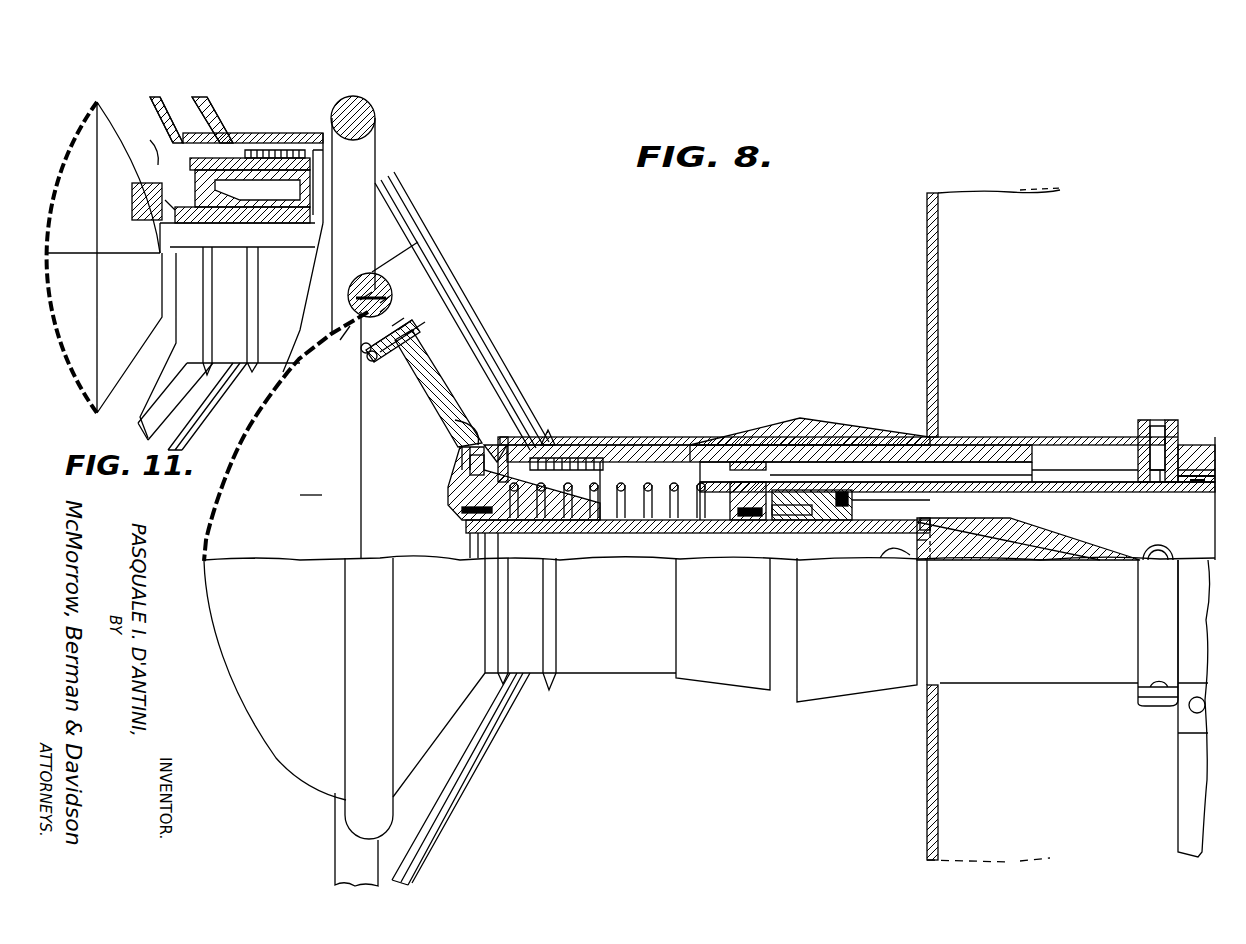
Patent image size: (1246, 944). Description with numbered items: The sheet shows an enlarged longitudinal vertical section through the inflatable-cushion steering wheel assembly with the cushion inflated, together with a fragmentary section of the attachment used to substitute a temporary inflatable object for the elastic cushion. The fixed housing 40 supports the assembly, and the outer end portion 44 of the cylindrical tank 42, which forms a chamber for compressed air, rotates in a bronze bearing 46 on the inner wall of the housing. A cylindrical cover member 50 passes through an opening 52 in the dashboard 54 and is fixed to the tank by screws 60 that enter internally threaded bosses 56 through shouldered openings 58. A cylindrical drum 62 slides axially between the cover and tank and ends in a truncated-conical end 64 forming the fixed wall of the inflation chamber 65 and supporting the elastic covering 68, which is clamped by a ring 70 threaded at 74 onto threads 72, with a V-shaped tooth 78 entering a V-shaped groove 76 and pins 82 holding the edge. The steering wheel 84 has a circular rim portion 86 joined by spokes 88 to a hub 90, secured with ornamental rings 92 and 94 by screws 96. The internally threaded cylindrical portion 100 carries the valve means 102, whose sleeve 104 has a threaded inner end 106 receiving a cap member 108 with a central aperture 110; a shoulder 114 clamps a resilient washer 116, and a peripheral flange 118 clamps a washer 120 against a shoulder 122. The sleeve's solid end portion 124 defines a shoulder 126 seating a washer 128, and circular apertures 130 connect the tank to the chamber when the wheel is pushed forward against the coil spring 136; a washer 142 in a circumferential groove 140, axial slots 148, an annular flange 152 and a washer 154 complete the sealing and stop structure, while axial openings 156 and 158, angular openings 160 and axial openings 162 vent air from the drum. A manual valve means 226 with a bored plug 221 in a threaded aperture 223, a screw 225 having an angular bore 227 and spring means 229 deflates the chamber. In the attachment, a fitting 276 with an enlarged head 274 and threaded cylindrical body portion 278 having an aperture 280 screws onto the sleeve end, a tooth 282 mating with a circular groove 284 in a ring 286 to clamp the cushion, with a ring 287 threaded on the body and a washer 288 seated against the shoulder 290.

In FIG. 8, the fixed housing 40 is at (1182, 452).
In FIG. 8, the cylindrical tank 42 is at (1085, 495).
In FIG. 8, the outer end portion 44 is at (1205, 500).
In FIG. 8, the bronze bearing 46 is at (1195, 482).
In FIG. 8, the cylindrical cover member 50 is at (800, 430).
In FIG. 8, the opening 52 is at (936, 440).
In FIG. 8, the dashboard 54 is at (940, 370).
In FIG. 8, the internally threaded bosses 56 is at (1170, 478).
In FIG. 8, the shouldered openings 58 is at (1180, 437).
In FIG. 8, the screws 60 is at (1138, 422).
In FIG. 8, the cylindrical drum 62 is at (695, 442).
In FIG. 8, the truncated-conical end 64 is at (445, 392).
In FIG. 8, the inflation chamber 65 is at (318, 498).
In FIG. 8, the elastic covering 68 is at (206, 518).
In FIG. 8, the ring 70 is at (404, 247).
In FIG. 8, the threads 72 is at (392, 296).
In FIG. 8, the threads 74 is at (353, 284).
In FIG. 8, the V-shaped groove 76 is at (387, 308).
In FIG. 8, the V-shaped tooth 78 is at (352, 324).
In FIG. 8, the pins 82 is at (373, 291).
In FIG. 8, the steering wheel 84 is at (394, 194).
In FIG. 8, the circular rim portion 86 is at (368, 170).
In FIG. 8, the spokes 88 is at (500, 440).
In FIG. 8, the hub 90 is at (510, 440).
In FIG. 8, the ornamental ring 92 is at (500, 443).
In FIG. 8, the ornamental ring 94 is at (556, 438).
In FIG. 8, the screws 96 is at (600, 452).
In FIG. 8, the internally threaded cylindrical portion 100 is at (580, 522).
In FIG. 8, the valve means 102 is at (665, 540).
In FIG. 8, the sleeve 104 is at (880, 545).
In FIG. 8, the threaded inner end 106 is at (558, 560).
In FIG. 8, the cap member 108 is at (456, 490).
In FIG. 8, the central aperture 110 is at (470, 552).
In FIG. 8, the shoulder 114 is at (462, 530).
In FIG. 8, the resilient washer 116 is at (483, 533).
In FIG. 8, the peripheral flange 118 is at (462, 452).
In FIG. 8, the washer 120 is at (476, 440).
In FIG. 8, the shoulder 122 is at (468, 465).
In FIG. 8, the solid end portion 124 is at (1010, 540).
In FIG. 8, the shoulder 126 is at (968, 530).
In FIG. 8, the washer 128 is at (928, 520).
In FIG. 8, the circular apertures 130 is at (910, 548).
In FIG. 8, the coil spring 136 is at (632, 470).
In FIG. 8, the circumferential groove 140 is at (748, 520).
In FIG. 8, the washer 142 is at (752, 518).
In FIG. 8, the axial slots 148 is at (804, 512).
In FIG. 8, the annular flange 152 is at (860, 503).
In FIG. 8, the washer 154 is at (850, 495).
In FIG. 8, the axial openings 156 is at (748, 468).
In FIG. 8, the axial openings 158 is at (1020, 478).
In FIG. 8, the angular openings 160 is at (1150, 475).
In FIG. 8, the axial openings 162 is at (1156, 418).
In FIG. 8, the bored plug 221 is at (400, 356).
In FIG. 8, the threaded aperture 223 is at (420, 345).
In FIG. 8, the screw 225 is at (414, 334).
In FIG. 8, the valve means 226 is at (404, 318).
In FIG. 8, the angular bore 227 is at (372, 360).
In FIG. 8, the spring means 229 is at (365, 350).
In FIG. 11, the enlarged head 274 is at (140, 190).
In FIG. 11, the fitting 276 is at (175, 218).
In FIG. 11, the cylindrical body portion 278 is at (265, 133).
In FIG. 11, the aperture 280 is at (168, 245).
In FIG. 11, the tooth 282 is at (170, 160).
In FIG. 11, the circular groove 284 is at (190, 133).
In FIG. 11, the ring 286 is at (228, 133).
In FIG. 11, the ring 287 is at (250, 130).
In FIG. 11, the washer 288 is at (180, 230).
In FIG. 11, the shoulder 290 is at (165, 232).